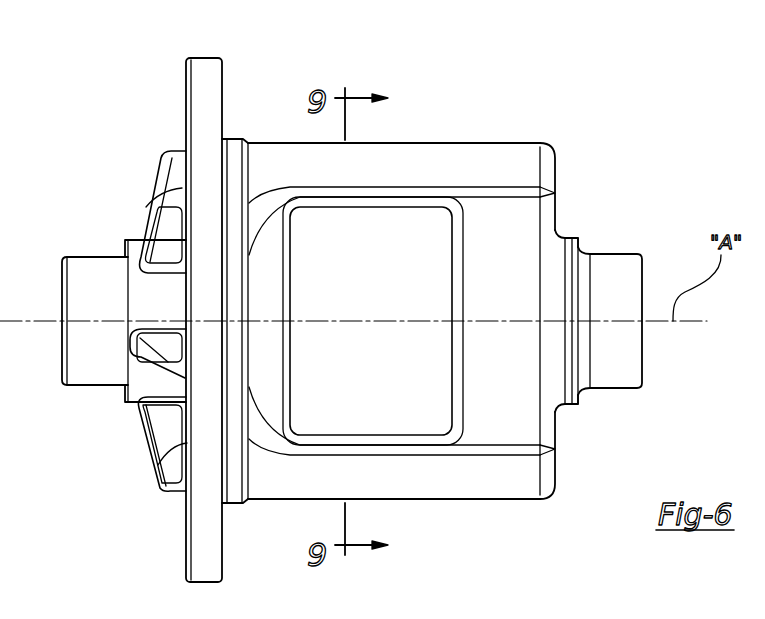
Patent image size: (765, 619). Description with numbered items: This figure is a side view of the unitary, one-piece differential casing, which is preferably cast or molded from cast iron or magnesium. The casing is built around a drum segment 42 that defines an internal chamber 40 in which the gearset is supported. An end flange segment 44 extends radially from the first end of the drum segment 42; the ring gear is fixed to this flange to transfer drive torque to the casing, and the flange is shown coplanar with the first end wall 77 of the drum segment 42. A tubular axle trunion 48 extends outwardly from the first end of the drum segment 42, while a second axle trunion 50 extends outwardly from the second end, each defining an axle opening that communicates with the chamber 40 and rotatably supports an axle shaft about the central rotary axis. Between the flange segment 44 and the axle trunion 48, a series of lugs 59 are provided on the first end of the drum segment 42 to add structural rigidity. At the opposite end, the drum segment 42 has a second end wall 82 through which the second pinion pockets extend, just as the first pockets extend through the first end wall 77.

The internal chamber 40 is at (411, 394).
The drum segment 42 is at (490, 157).
The end flange segment 44 is at (186, 81).
The axle trunion 48 is at (92, 268).
The axle trunion 50 is at (610, 275).
The lugs 59 is at (157, 180).
The first end wall 77 is at (160, 491).
The second end wall 82 is at (556, 178).